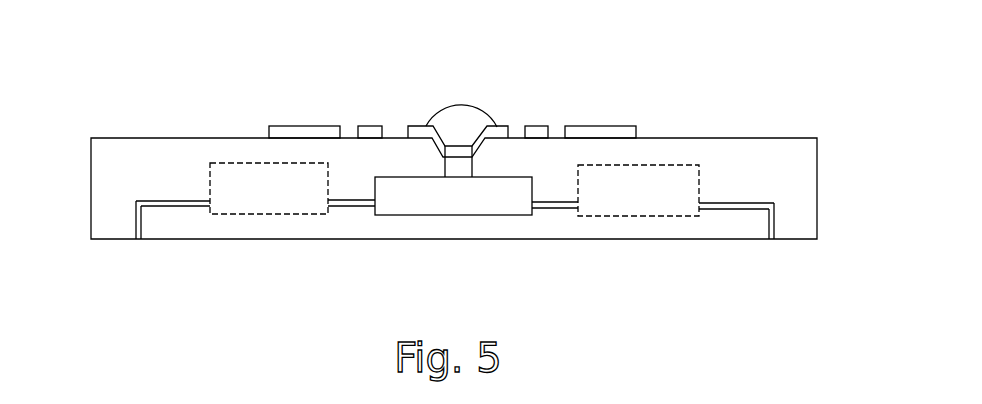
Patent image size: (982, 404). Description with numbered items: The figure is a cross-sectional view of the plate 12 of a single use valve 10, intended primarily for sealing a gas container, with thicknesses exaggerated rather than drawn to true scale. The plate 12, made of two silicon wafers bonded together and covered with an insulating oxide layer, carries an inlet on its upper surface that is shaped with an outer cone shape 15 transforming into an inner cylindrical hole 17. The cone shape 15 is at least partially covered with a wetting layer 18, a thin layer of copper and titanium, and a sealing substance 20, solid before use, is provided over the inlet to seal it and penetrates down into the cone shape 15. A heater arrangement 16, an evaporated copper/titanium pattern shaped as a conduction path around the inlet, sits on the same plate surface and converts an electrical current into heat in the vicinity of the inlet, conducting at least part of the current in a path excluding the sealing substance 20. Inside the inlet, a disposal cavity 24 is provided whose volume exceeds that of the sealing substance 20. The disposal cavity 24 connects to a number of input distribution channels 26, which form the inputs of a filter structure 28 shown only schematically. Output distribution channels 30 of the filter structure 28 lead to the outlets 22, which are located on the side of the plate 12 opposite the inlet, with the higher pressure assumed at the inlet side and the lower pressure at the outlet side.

The single use valve 10 is at (702, 88).
The plate 12 is at (91, 239).
The outer cone shape 15 is at (453, 138).
The heater arrangement 16 is at (292, 131).
The inner cylindrical hole 17 is at (450, 170).
The wetting layer 18 is at (501, 127).
The sealing substance 20 is at (474, 112).
The outlets 22 is at (138, 240).
The disposal cavity 24 is at (462, 216).
The input distribution channels 26 is at (352, 207).
The filter structure 28 is at (273, 214).
The output distribution channels 30 is at (172, 207).